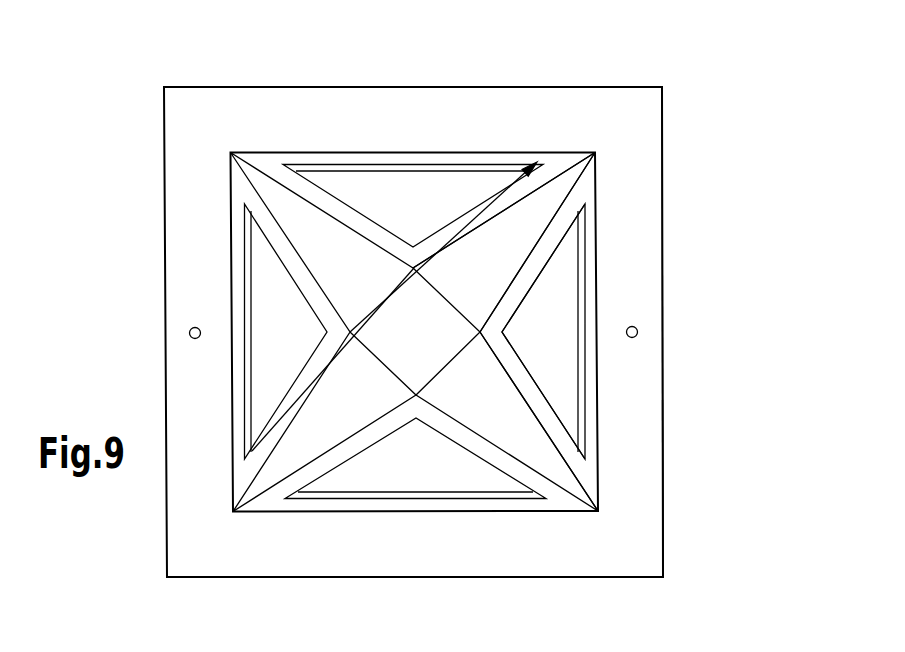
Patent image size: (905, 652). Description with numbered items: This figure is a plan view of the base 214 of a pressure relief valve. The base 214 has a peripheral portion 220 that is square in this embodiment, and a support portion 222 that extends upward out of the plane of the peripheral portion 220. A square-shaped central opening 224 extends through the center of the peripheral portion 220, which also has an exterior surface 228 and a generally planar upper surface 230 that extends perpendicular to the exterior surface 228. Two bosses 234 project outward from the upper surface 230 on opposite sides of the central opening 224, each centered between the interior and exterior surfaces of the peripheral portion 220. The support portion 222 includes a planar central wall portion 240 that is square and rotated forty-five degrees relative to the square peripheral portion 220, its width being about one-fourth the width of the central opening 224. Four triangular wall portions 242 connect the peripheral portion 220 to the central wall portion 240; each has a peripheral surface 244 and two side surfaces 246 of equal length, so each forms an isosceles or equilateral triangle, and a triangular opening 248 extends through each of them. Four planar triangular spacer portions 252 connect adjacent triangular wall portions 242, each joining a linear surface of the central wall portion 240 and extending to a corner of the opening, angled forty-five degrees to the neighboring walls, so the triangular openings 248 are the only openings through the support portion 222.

The base 214 is at (177, 208).
The peripheral portion 220 is at (652, 421).
The support portion 222 is at (558, 248).
The central opening 224 is at (565, 307).
The exterior surface 228 is at (665, 494).
The upper surface 230 is at (640, 465).
The boss 234 is at (189, 334).
The central wall portion 240 is at (427, 318).
The triangular wall portion 242 is at (553, 190).
The peripheral surface 244 is at (497, 150).
The side surface 246 is at (457, 238).
The triangular opening 248 is at (455, 185).
The triangular spacer portion 252 is at (284, 205).